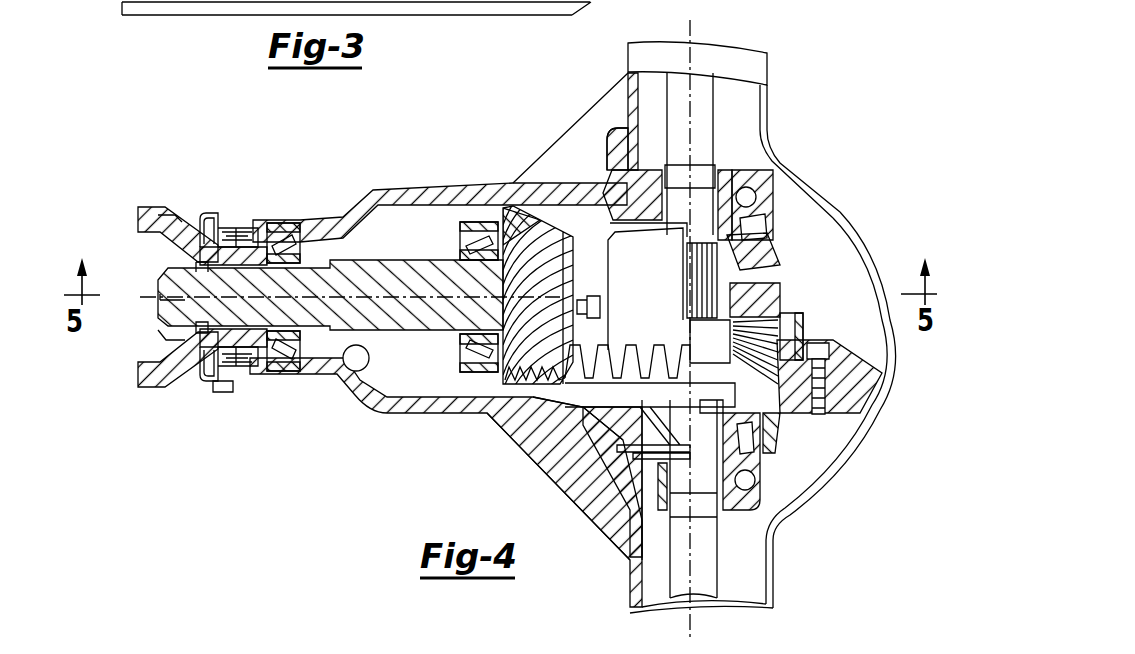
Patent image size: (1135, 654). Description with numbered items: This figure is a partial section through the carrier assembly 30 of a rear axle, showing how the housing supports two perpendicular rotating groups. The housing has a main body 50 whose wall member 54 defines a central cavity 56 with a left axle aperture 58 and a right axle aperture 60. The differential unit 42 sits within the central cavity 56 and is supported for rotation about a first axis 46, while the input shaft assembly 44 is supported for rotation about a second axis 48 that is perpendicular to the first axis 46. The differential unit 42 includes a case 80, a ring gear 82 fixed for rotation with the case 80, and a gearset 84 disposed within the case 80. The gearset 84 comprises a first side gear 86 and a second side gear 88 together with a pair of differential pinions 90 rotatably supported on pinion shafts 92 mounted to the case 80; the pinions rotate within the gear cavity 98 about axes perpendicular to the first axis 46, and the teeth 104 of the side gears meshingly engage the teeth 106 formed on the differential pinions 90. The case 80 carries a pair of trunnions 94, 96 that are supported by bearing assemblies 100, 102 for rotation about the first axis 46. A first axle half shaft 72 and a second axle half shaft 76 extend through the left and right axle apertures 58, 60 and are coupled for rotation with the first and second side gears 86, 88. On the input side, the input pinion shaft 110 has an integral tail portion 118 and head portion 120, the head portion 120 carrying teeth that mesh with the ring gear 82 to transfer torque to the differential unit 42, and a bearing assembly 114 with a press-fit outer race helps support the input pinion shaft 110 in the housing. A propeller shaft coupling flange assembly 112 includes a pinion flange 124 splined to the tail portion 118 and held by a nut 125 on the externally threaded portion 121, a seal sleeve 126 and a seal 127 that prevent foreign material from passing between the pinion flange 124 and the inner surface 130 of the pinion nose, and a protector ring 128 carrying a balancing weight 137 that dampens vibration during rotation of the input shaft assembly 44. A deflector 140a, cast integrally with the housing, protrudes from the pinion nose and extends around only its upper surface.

The carrier assembly 30 is at (890, 55).
The differential unit 42 is at (615, 424).
The input shaft assembly 44 is at (400, 385).
The first axis 46 is at (693, 28).
The second axis 48 is at (160, 290).
The main body 50 is at (838, 213).
The wall member 54 is at (463, 192).
The central cavity 56 is at (855, 272).
The left axle aperture 58 is at (760, 620).
The right axle aperture 60 is at (752, 62).
The first axle half shaft 72 is at (714, 590).
The second axle half shaft 76 is at (705, 106).
The case 80 is at (654, 238).
The ring gear 82 is at (555, 378).
The gearset 84 is at (846, 213).
The first side gear 86 is at (720, 415).
The second side gear 88 is at (748, 272).
The differential pinions 90 is at (772, 313).
The pinion shafts 92 is at (798, 333).
The trunnion 94 is at (752, 440).
The trunnion 96 is at (795, 190).
The gear cavity 98 is at (700, 347).
The bearing assembly 100 is at (748, 447).
The bearing assembly 102 is at (773, 213).
The teeth 104 is at (688, 390).
The teeth 106 is at (772, 382).
The input pinion shaft 110 is at (420, 259).
The propeller shaft coupling flange assembly 112 is at (168, 206).
The bearing assembly 114 is at (462, 205).
The tail portion 118 is at (397, 334).
The head portion 120 is at (543, 200).
The externally threaded portion 121 is at (160, 306).
The pinion flange 124 is at (143, 224).
The nut 125 is at (162, 338).
The seal sleeve 126 is at (228, 216).
The seal 127 is at (240, 236).
The protector ring 128 is at (211, 204).
The inner surface 130 is at (352, 388).
The balancing weight 137 is at (222, 393).
The deflector 140a is at (268, 220).